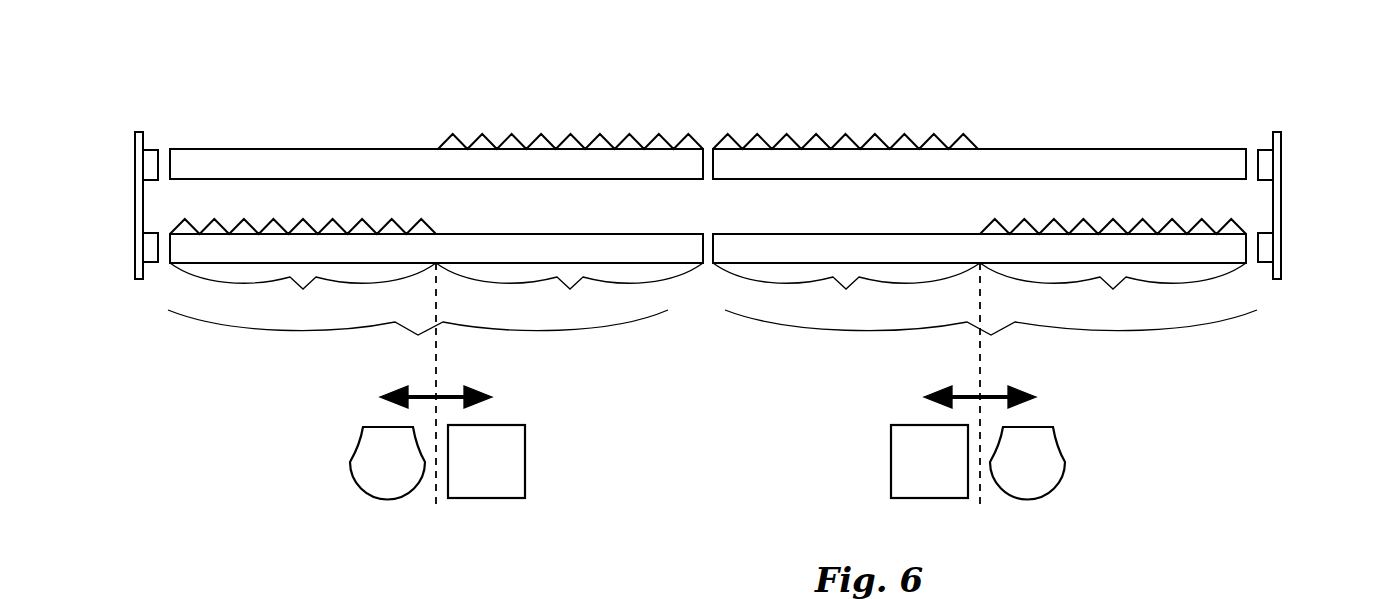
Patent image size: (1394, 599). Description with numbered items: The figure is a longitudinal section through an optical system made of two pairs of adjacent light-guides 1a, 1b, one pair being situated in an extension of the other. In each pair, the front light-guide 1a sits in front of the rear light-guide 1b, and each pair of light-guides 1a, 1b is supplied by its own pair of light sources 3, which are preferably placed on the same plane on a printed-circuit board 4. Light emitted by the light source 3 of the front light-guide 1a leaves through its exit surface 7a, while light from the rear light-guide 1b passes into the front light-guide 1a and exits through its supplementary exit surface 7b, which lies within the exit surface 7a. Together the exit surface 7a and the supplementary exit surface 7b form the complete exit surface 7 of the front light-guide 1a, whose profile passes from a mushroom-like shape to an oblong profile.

The front light-guide 1a is at (760, 247).
The rear light-guide 1b is at (322, 163).
The light source 3 is at (158, 149).
The printed-circuit board 4 is at (135, 225).
The complete exit surface 7 is at (712, 384).
The exit surface 7a is at (708, 294).
The supplementary exit surface 7b is at (708, 293).